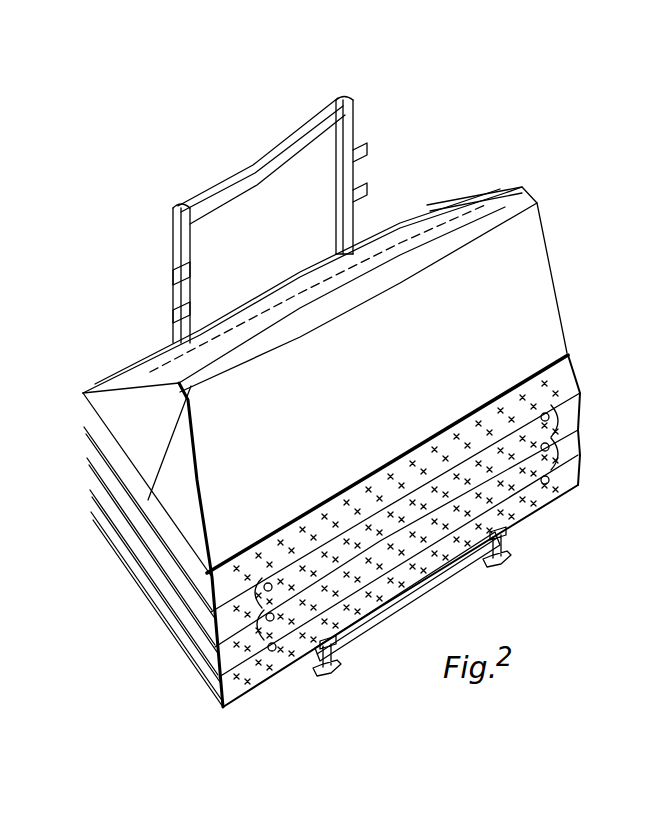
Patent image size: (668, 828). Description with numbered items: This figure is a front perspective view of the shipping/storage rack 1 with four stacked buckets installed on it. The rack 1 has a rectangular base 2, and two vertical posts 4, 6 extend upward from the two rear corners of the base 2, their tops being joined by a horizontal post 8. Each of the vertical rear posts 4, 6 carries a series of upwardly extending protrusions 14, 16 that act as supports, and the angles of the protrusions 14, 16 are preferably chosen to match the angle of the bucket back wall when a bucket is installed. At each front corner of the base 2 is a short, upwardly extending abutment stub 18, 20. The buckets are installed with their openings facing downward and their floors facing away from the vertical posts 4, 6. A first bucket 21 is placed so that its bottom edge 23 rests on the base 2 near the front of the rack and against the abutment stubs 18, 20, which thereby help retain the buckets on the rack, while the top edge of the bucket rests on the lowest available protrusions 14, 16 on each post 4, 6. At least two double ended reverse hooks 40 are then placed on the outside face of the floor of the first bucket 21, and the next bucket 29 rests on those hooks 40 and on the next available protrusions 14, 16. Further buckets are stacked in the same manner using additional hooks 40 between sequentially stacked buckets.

The rack 1 is at (386, 76).
The rectangular base 2 is at (433, 589).
The post 4 is at (336, 176).
The post 6 is at (166, 236).
The horizontal post 8 is at (256, 165).
The protrusions 14 is at (202, 300).
The protrusions 16 is at (372, 182).
The abutment stub 18 is at (318, 669).
The abutment stub 20 is at (507, 546).
The first bucket 21 is at (160, 622).
The bottom edge 23 is at (366, 633).
The next bucket 29 is at (138, 582).
The double ended reverse hooks 40 is at (552, 449).